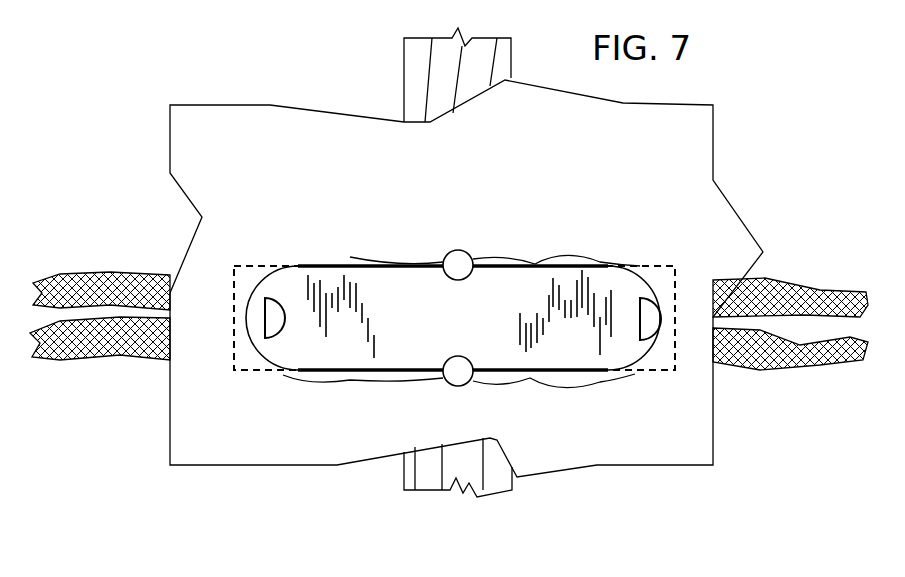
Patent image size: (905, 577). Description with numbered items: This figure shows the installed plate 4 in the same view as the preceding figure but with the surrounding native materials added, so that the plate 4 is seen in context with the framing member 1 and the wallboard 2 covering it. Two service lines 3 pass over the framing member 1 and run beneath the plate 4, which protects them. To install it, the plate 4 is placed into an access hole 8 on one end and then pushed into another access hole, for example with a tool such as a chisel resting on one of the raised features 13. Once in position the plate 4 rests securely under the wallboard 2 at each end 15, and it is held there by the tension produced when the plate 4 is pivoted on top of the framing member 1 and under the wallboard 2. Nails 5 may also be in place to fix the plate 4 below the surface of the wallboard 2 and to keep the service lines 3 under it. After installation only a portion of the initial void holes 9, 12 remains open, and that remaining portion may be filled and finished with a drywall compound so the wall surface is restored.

The framing member 1 is at (467, 488).
The wallboard 2 is at (188, 140).
The service lines 3 is at (82, 272).
The plate 4 is at (518, 290).
The nails 5 is at (457, 256).
The access hole 8 is at (596, 383).
The void hole 9 is at (573, 260).
The void hole 12 is at (351, 258).
The raised feature 13 is at (654, 348).
The end 15 is at (668, 288).